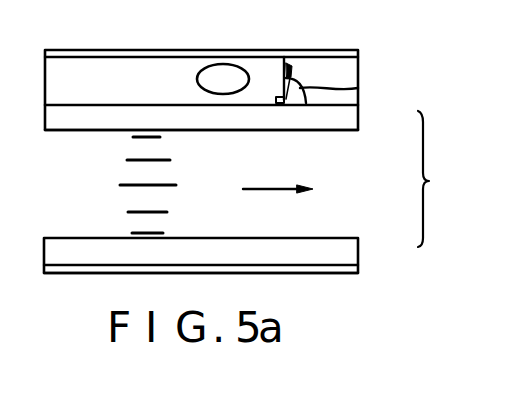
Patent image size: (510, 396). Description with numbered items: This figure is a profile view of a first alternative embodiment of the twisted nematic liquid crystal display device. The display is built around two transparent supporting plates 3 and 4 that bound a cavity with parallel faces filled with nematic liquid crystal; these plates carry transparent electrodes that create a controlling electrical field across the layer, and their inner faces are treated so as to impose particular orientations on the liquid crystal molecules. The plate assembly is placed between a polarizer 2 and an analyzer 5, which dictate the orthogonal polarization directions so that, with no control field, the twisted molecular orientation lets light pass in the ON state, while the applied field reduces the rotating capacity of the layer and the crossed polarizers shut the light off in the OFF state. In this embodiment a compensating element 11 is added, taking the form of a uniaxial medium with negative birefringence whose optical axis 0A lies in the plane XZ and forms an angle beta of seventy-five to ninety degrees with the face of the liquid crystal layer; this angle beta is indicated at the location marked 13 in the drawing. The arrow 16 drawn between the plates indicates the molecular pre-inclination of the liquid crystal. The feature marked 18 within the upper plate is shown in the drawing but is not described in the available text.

The polarizer 2 is at (131, 50).
The transparent supporting plate 3 is at (358, 123).
The compensating element 11 is at (358, 76).
The bubble 18 is at (212, 63).
The optical axis 0A is at (286, 55).
The meniscus 13 is at (358, 88).
The arrow indicating molecular pre-inclination 16 is at (281, 186).
The transparent supporting plate 4 is at (358, 250).
The analyzer 5 is at (358, 267).